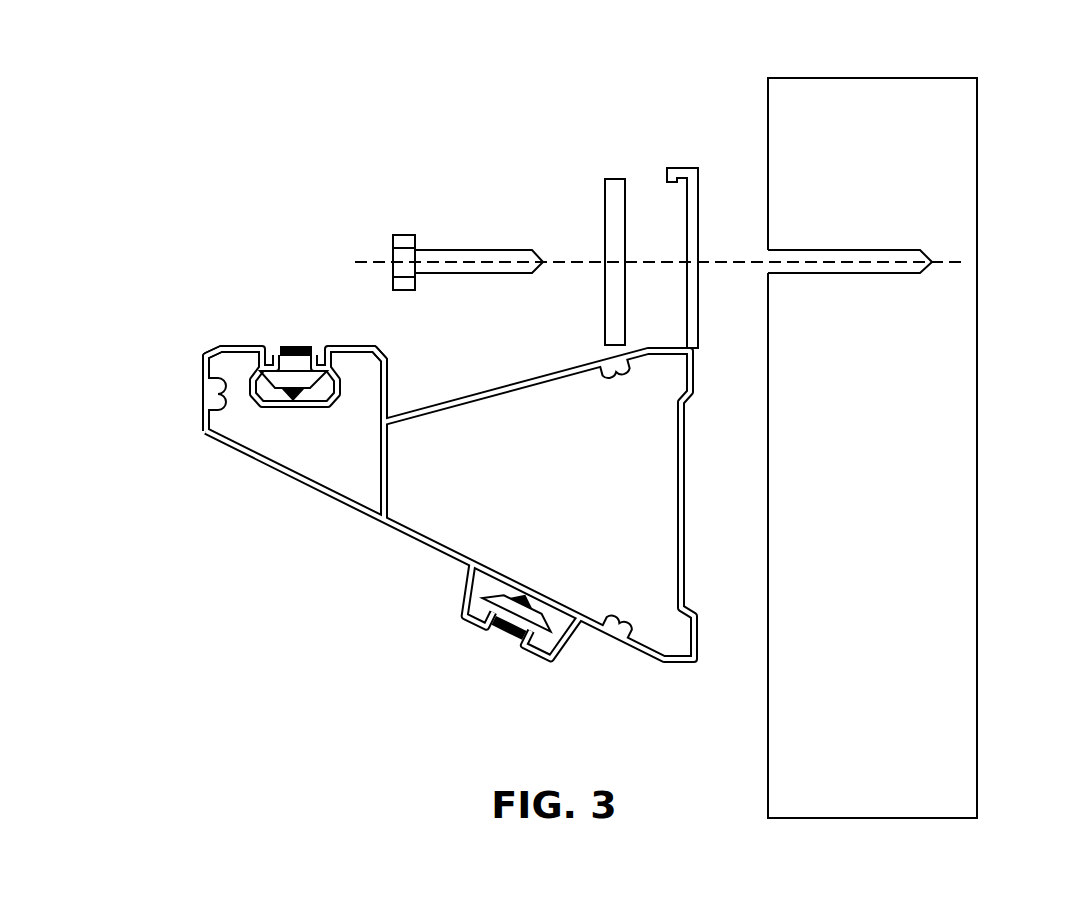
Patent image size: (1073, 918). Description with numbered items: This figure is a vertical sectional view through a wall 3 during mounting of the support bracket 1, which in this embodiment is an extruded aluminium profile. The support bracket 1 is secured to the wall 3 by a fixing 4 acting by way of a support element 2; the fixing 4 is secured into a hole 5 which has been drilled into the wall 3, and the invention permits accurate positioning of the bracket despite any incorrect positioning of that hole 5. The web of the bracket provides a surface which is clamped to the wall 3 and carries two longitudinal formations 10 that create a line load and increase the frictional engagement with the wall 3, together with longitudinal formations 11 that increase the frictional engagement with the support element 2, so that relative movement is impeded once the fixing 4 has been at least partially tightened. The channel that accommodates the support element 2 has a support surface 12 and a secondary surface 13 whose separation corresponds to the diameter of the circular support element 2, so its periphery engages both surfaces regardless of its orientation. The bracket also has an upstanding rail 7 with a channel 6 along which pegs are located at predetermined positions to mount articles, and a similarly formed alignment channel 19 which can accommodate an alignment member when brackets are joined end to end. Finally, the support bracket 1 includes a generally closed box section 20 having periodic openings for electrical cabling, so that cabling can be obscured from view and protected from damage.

The support bracket 1 is at (679, 145).
The support element 2 is at (600, 182).
The wall 3 is at (952, 158).
The fixing 4 is at (387, 230).
The hole 5 is at (893, 267).
The channel 6 is at (283, 330).
The upstanding rail 7 is at (205, 382).
The longitudinal formations 10 is at (700, 185).
The longitudinal formations 11 is at (682, 330).
The support surface 12 is at (680, 178).
The secondary surface 13 is at (678, 345).
The alignment channel 19 is at (558, 630).
The box section 20 is at (418, 474).